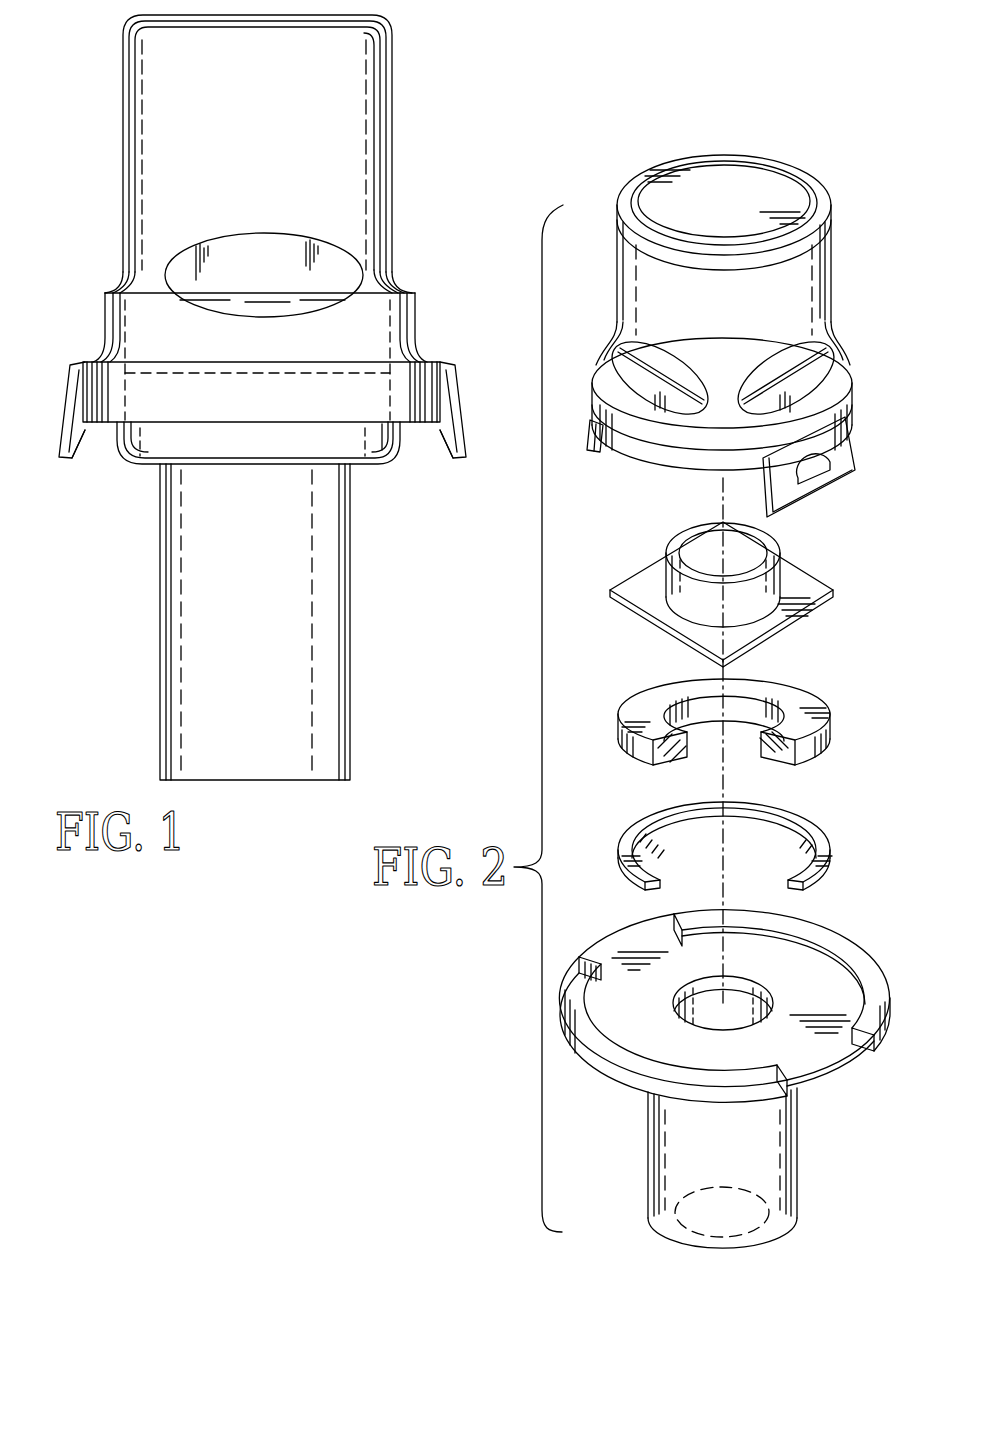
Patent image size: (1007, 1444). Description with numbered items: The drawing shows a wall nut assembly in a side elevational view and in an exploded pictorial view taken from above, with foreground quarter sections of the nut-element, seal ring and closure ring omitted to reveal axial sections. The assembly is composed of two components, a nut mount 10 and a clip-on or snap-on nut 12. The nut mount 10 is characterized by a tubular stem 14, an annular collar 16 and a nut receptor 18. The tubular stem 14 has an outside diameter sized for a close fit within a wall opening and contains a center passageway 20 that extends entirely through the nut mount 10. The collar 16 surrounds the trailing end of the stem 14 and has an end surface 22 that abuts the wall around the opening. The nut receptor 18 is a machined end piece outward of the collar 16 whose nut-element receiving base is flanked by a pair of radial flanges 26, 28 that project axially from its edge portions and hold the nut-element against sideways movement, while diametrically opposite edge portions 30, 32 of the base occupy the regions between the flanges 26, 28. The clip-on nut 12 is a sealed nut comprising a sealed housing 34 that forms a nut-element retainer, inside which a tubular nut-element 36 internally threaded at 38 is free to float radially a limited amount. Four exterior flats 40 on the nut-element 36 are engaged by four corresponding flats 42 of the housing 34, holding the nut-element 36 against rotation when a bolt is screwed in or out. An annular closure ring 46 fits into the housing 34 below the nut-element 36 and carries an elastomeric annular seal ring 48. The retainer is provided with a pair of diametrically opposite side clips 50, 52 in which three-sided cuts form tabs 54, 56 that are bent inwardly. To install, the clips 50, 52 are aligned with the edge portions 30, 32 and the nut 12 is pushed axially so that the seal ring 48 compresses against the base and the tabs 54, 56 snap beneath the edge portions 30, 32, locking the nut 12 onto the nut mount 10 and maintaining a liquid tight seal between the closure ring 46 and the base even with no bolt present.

In FIG. 1, the nut mount 10 is at (148, 622).
In FIG. 2, the nut mount 10 is at (637, 1200).
In FIG. 1, the clip-on nut 12 is at (102, 172).
In FIG. 2, the clip-on nut 12 is at (722, 396).
In FIG. 1, the tubular stem 14 is at (333, 655).
In FIG. 2, the tubular stem 14 is at (785, 1182).
In FIG. 1, the annular collar 16 is at (354, 450).
In FIG. 2, the nut receptor 18 is at (683, 1045).
In FIG. 2, the center passageway 20 is at (740, 995).
In FIG. 1, the end surface 22 is at (248, 466).
In FIG. 2, the radial flange 26 is at (592, 1032).
In FIG. 2, the radial flange 28 is at (852, 955).
In FIG. 2, the edge portion 30 is at (638, 962).
In FIG. 2, the edge portion 32 is at (835, 1055).
In FIG. 1, the sealed housing 34 is at (270, 104).
In FIG. 2, the sealed housing 34 is at (740, 320).
In FIG. 2, the nut-element 36 is at (785, 578).
In FIG. 2, the internal threads 38 is at (690, 540).
In FIG. 2, the flats 40 is at (788, 620).
In FIG. 1, the flats 42 is at (273, 248).
In FIG. 2, the flats 42 is at (628, 345).
In FIG. 2, the closure ring 46 is at (815, 730).
In FIG. 2, the seal ring 48 is at (815, 840).
In FIG. 1, the side clip 50 is at (62, 455).
In FIG. 2, the side clip 50 is at (598, 450).
In FIG. 1, the side clip 52 is at (460, 460).
In FIG. 2, the side clip 52 is at (815, 490).
In FIG. 1, the tab 54 is at (88, 442).
In FIG. 1, the tab 56 is at (442, 434).
In FIG. 2, the tab 56 is at (830, 465).